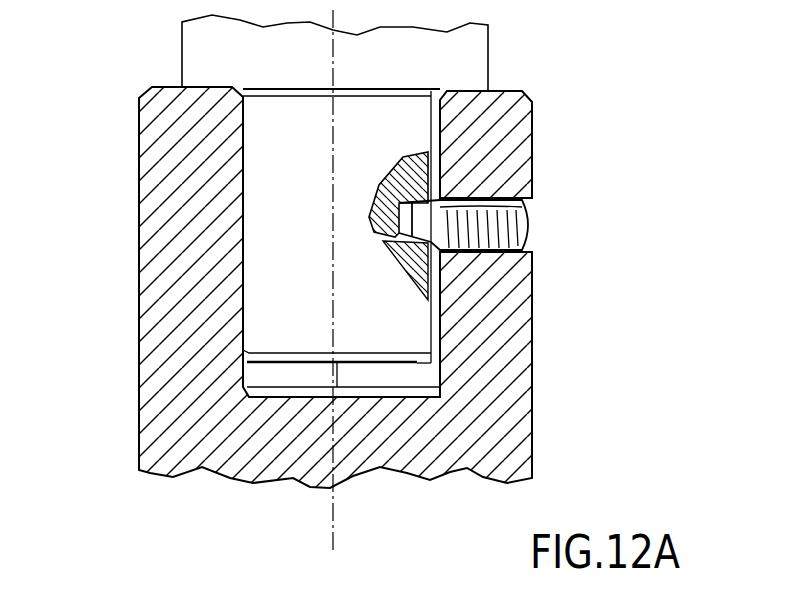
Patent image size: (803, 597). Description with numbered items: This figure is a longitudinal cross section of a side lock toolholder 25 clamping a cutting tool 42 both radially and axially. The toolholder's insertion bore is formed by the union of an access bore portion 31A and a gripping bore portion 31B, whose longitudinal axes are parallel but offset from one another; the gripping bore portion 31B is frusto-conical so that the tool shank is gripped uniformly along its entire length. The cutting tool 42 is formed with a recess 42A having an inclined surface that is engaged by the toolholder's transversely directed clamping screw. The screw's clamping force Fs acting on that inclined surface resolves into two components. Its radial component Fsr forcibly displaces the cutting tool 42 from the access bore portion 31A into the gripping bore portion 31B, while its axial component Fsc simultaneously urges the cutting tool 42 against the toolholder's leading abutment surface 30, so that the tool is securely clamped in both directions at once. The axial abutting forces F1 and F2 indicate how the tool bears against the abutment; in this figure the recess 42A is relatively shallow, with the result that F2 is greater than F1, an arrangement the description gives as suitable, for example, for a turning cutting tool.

The leading abutment surface 30 is at (292, 251).
The side lock toolholder 25 is at (173, 217).
The cutting tool 42 is at (482, 40).
The recess 42A is at (495, 216).
The access bore portion 31A is at (407, 377).
The gripping bore portion 31B is at (277, 373).
The axial abutting force F1 is at (206, 120).
The axial abutting force F2 is at (469, 128).
The clamping force Fs is at (412, 240).
The radial component of clamping force Fsr is at (380, 317).
The axial component of clamping force Fsc is at (417, 243).